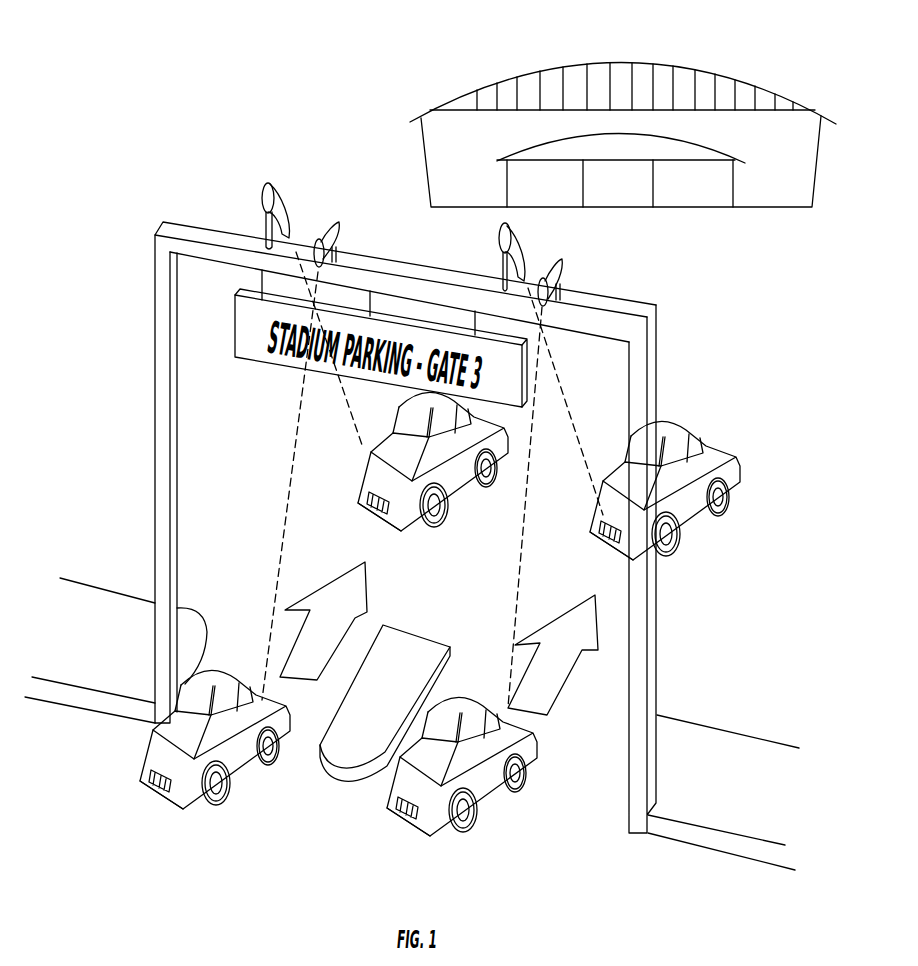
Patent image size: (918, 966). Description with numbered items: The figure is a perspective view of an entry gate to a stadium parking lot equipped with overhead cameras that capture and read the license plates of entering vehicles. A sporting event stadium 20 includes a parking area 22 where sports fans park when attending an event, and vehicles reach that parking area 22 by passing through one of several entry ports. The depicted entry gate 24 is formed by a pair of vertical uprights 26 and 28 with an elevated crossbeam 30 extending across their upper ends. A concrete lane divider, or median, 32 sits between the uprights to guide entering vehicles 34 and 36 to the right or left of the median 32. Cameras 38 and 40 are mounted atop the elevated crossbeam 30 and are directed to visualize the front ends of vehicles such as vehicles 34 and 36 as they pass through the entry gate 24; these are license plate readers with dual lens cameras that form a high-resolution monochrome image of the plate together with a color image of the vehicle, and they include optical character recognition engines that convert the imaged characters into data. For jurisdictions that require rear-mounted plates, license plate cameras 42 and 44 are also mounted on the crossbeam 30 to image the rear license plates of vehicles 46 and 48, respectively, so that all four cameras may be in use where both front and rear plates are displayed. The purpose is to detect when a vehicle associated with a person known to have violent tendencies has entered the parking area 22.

The sporting event stadium 20 is at (805, 78).
The parking area 22 is at (737, 292).
The entry gate 24 is at (143, 520).
The vertical upright 26 is at (178, 538).
The vertical upright 28 is at (657, 608).
The elevated crossbeam 30 is at (398, 262).
The concrete lane divider (median) 32 is at (428, 636).
The vehicle 34 is at (472, 692).
The vehicle 36 is at (228, 665).
The camera 38 is at (562, 271).
The camera 40 is at (337, 222).
The license plate camera 42 is at (498, 233).
The license plate camera 44 is at (268, 185).
The vehicle 46 is at (720, 447).
The vehicle 48 is at (390, 532).